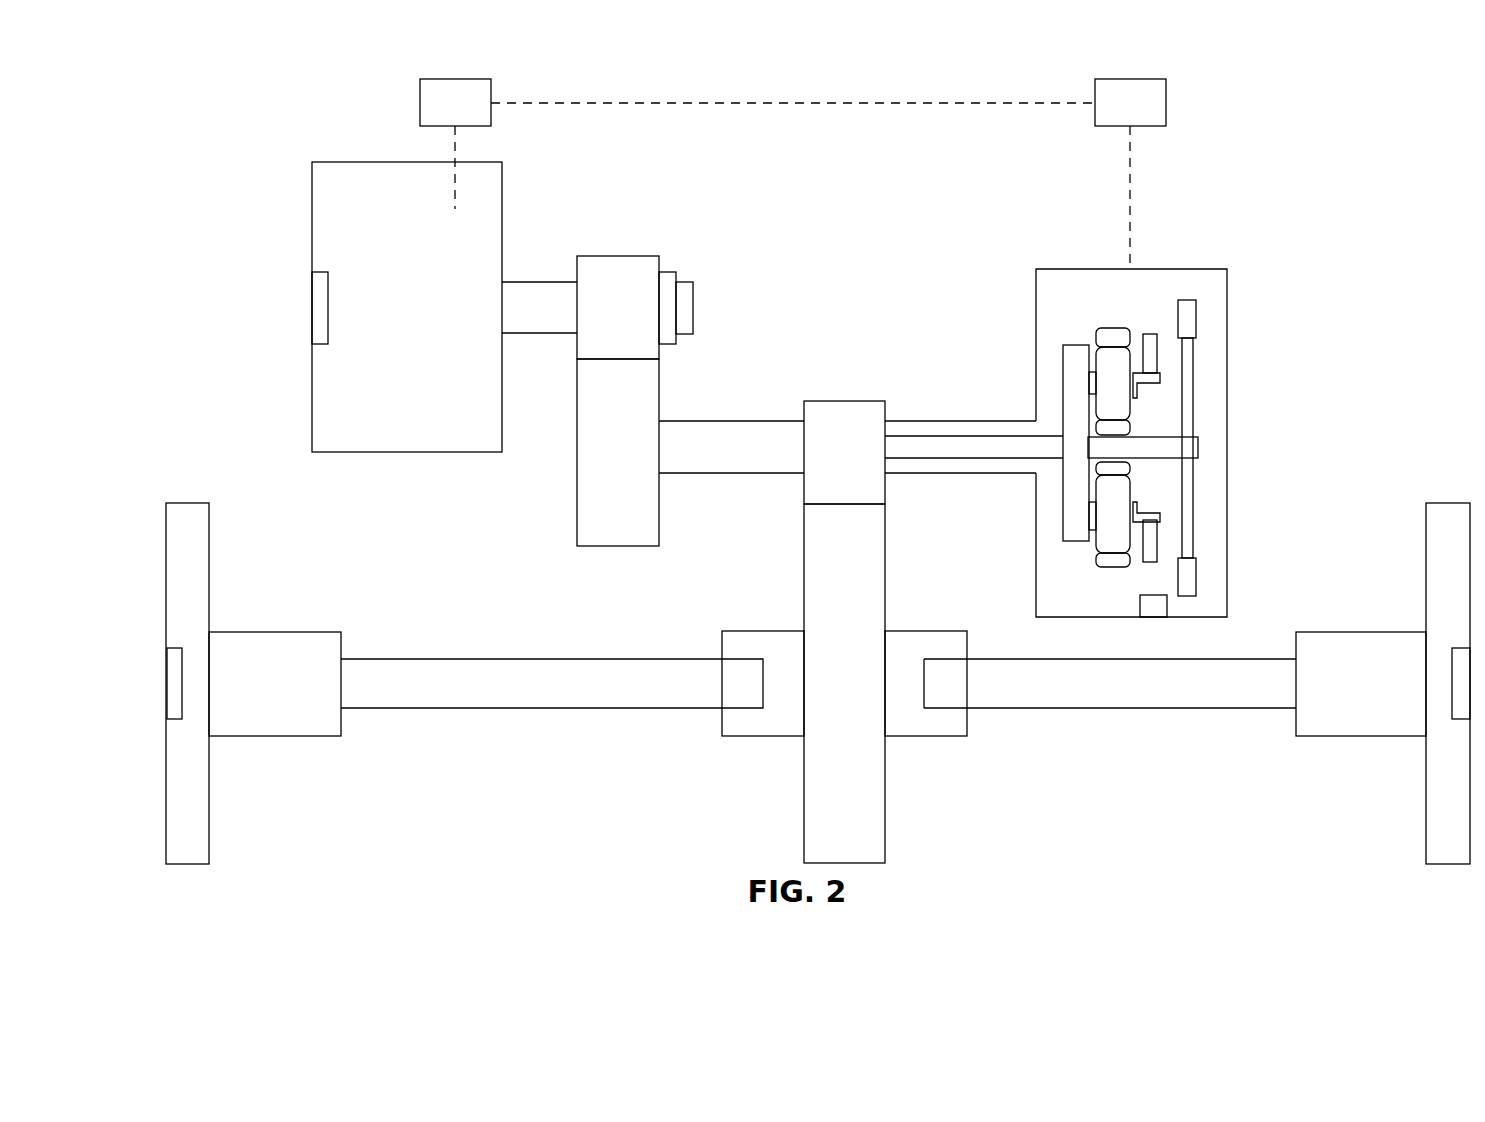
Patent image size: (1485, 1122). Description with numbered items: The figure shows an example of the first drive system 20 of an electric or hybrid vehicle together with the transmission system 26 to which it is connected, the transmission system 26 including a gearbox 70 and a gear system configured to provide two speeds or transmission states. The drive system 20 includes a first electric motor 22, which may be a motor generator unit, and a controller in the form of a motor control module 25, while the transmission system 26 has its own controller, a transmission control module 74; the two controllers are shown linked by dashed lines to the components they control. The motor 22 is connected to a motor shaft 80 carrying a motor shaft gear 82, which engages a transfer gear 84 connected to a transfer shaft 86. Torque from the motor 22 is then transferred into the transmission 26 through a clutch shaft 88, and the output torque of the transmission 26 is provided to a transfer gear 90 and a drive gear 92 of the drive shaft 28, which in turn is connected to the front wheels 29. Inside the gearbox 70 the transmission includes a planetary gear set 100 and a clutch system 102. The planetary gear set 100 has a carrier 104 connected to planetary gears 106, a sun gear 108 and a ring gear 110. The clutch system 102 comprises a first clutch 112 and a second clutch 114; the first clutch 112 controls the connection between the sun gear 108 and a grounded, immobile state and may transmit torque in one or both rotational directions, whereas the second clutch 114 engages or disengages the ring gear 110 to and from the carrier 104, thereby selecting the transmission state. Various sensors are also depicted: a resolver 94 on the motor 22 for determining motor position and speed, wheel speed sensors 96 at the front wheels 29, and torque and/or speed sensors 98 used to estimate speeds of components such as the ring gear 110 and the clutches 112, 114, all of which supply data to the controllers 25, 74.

The first drive system 20 is at (793, 215).
The first electric motor 22 is at (312, 207).
The motor control module 25 is at (456, 79).
The transmission system 26 is at (1238, 258).
The drive shaft 28 is at (445, 658).
The front wheels 29 is at (165, 555).
The gearbox 70 is at (1068, 268).
The transmission control module 74 is at (1130, 79).
The motor shaft 80 is at (540, 282).
The motor shaft gear 82 is at (615, 256).
The transfer gear 84 is at (617, 548).
The transfer shaft 86 is at (737, 475).
The clutch shaft 88 is at (948, 435).
The transfer gear 90 is at (845, 400).
The drive gear 92 is at (888, 552).
The resolver 94 is at (328, 305).
The wheel speed sensors 96 is at (165, 685).
The torque and/or speed sensors 98 is at (1152, 610).
The planetary gear set 100 is at (1138, 290).
The clutch system 102 is at (1200, 383).
The carrier 104 is at (1068, 388).
The planetary gears 106 is at (1110, 355).
The sun gear 108 is at (1120, 465).
The ring gear 110 is at (1108, 565).
The first clutch 112 is at (1195, 315).
The second clutch 114 is at (1150, 335).